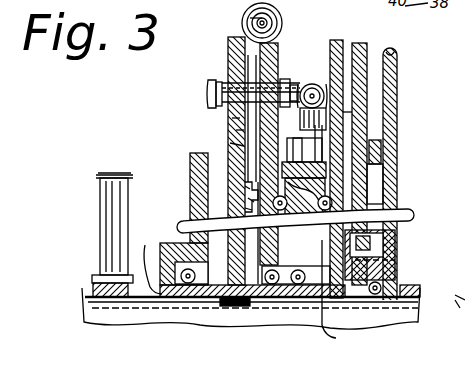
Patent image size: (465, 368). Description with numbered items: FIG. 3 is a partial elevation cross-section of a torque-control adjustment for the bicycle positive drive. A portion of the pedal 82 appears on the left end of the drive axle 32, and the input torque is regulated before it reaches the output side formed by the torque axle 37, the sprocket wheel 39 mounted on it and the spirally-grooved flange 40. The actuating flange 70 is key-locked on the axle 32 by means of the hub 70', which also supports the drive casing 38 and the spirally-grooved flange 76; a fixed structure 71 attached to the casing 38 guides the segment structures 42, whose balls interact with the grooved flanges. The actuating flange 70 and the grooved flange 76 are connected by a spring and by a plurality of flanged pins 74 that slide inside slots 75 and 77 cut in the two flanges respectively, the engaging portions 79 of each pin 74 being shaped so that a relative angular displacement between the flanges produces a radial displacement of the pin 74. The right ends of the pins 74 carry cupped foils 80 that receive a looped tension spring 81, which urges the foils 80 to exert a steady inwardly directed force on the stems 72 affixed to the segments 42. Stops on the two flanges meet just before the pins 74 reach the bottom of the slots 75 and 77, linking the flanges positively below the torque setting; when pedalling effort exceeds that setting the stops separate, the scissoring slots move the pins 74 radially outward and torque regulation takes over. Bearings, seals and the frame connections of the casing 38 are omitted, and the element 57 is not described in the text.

The drive axle 32 is at (86, 300).
The torque axle 37 is at (396, 276).
The drive casing 38 is at (190, 151).
The sprocket wheel 39 is at (398, 126).
The spirally-grooved flange 40 is at (343, 160).
The segment structure 42 is at (345, 181).
The bracket 57 is at (464, 335).
The actuating flange 70 is at (200, 212).
The hub 70' is at (147, 261).
The fixed structure 71 is at (332, 42).
The stem 72 is at (345, 114).
The flanged pin 74 is at (212, 84).
The slot 75 is at (236, 130).
The spirally-grooved flange 76 is at (230, 143).
The slot 77 is at (232, 118).
The portion of pin 79 is at (236, 62).
The cupped foil 80 is at (304, 85).
The looped tension spring 81 is at (313, 82).
The pedal 82 is at (100, 200).